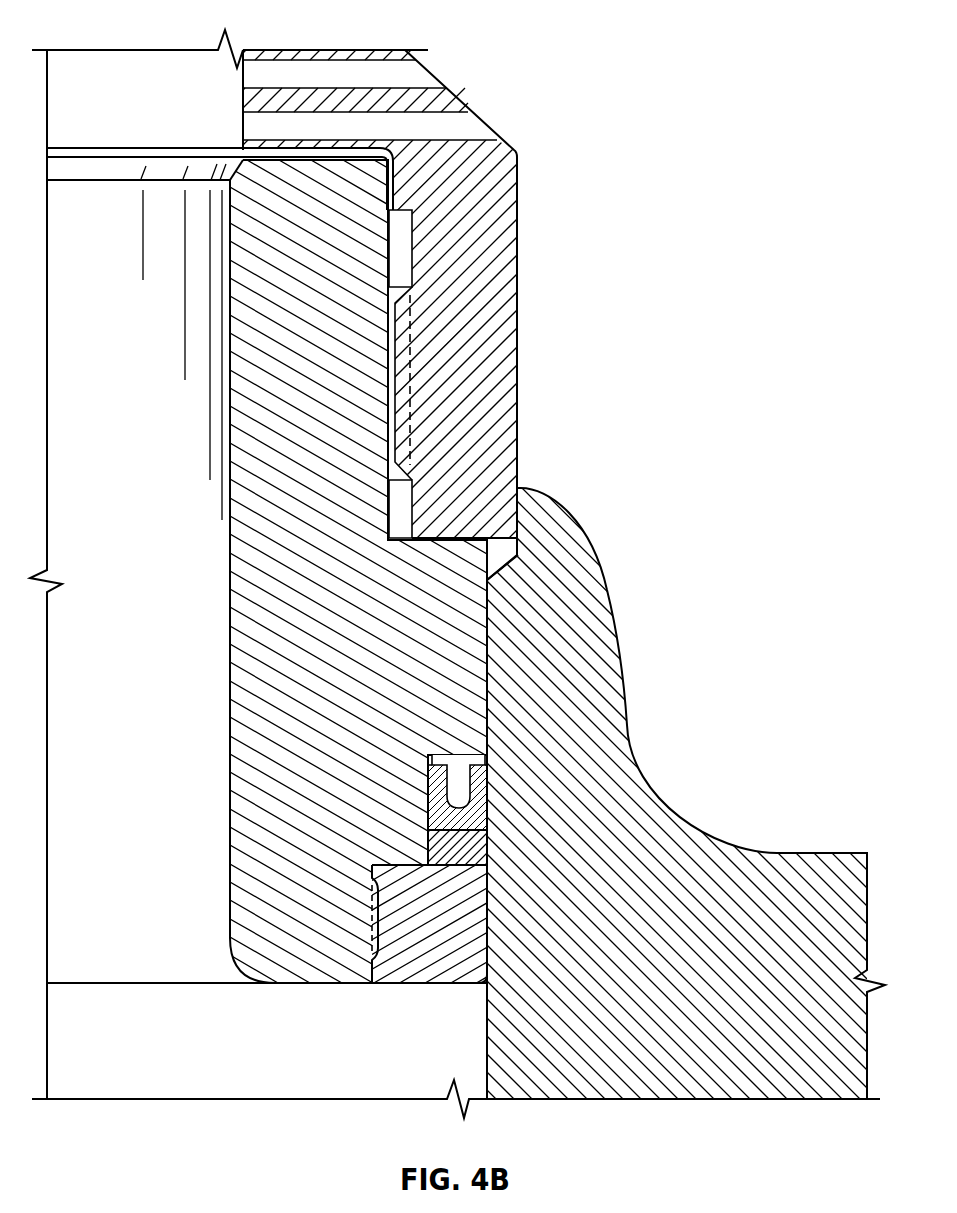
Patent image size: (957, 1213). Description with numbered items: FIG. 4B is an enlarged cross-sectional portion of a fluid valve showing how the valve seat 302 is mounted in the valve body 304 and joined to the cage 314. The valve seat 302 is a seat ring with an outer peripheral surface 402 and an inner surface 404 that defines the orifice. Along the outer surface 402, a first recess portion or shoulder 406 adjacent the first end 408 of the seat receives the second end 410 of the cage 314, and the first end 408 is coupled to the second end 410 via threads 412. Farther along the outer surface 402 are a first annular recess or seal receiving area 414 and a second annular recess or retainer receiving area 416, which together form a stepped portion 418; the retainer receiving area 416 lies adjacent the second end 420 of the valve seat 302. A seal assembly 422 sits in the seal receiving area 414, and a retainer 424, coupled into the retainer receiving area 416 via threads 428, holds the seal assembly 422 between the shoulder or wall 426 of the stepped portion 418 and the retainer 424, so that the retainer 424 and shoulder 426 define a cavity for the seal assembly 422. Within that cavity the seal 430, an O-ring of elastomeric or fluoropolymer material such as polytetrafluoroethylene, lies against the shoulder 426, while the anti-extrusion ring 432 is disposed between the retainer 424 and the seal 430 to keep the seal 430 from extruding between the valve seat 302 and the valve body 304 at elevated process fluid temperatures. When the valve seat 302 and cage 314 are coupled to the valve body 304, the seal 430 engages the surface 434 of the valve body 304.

The valve seat 302 is at (645, 793).
The valve body 304 is at (487, 1047).
The cage 314 is at (422, 315).
The outer peripheral surface 402 is at (320, 629).
The inner surface 404 is at (230, 600).
The first recess portion or shoulder 406 is at (394, 252).
The first end 408 is at (305, 172).
The second end 410 is at (519, 443).
The threads 412 is at (388, 385).
The seal receiving area 414 is at (428, 773).
The retainer receiving area 416 is at (320, 949).
The stepped portion 418 is at (352, 712).
The second end 420 is at (315, 983).
The seal assembly 422 is at (493, 842).
The retainer 424 is at (410, 967).
The shoulder or wall 426 is at (465, 757).
The threads 428 is at (366, 944).
The seal 430 is at (432, 730).
The anti-extrusion ring 432 is at (457, 838).
The surface 434 is at (488, 645).